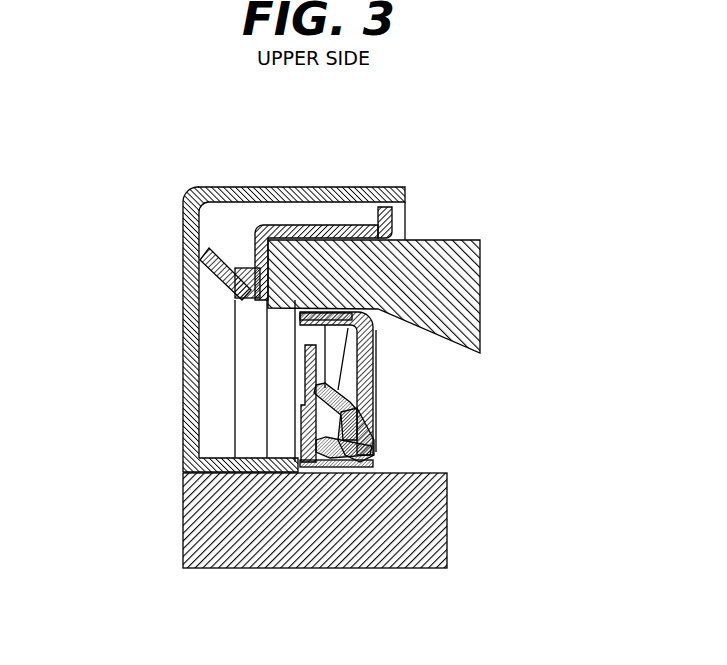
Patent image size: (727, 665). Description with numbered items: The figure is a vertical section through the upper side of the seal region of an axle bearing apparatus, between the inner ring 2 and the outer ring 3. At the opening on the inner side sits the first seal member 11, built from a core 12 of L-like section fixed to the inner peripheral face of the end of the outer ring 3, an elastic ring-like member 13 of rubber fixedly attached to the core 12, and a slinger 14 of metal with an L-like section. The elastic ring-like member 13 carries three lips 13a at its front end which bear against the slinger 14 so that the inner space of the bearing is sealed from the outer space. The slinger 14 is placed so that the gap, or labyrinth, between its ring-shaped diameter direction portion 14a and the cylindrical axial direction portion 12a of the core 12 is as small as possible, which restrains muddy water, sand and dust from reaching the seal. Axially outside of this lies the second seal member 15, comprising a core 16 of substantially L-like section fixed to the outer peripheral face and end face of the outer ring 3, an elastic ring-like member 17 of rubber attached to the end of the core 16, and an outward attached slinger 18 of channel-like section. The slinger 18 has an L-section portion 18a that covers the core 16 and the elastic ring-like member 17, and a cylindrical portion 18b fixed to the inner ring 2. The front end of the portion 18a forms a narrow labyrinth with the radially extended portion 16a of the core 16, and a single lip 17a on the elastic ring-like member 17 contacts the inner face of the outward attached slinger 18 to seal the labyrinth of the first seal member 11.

The inner ring 2 is at (270, 533).
The outer ring 3 is at (470, 242).
The first seal member 11 is at (583, 328).
The core 12 is at (375, 363).
The axial direction portion 12a is at (410, 242).
The elastic ring-like member 13 is at (375, 407).
The lips 13a is at (375, 326).
The slinger 14 is at (375, 416).
The diameter direction portion 14a is at (305, 355).
The second seal member 15 is at (198, 170).
The core 16 is at (312, 224).
The portion on a side of the outer ring extended in a diameter direction 16a is at (395, 207).
The elastic ring-like member 17 is at (237, 305).
The lip 17a is at (203, 253).
The outward attached slinger 18 is at (183, 395).
The portion having a section in an L-like shape 18a is at (368, 187).
The portion in a circular cylinder shape 18b is at (228, 480).